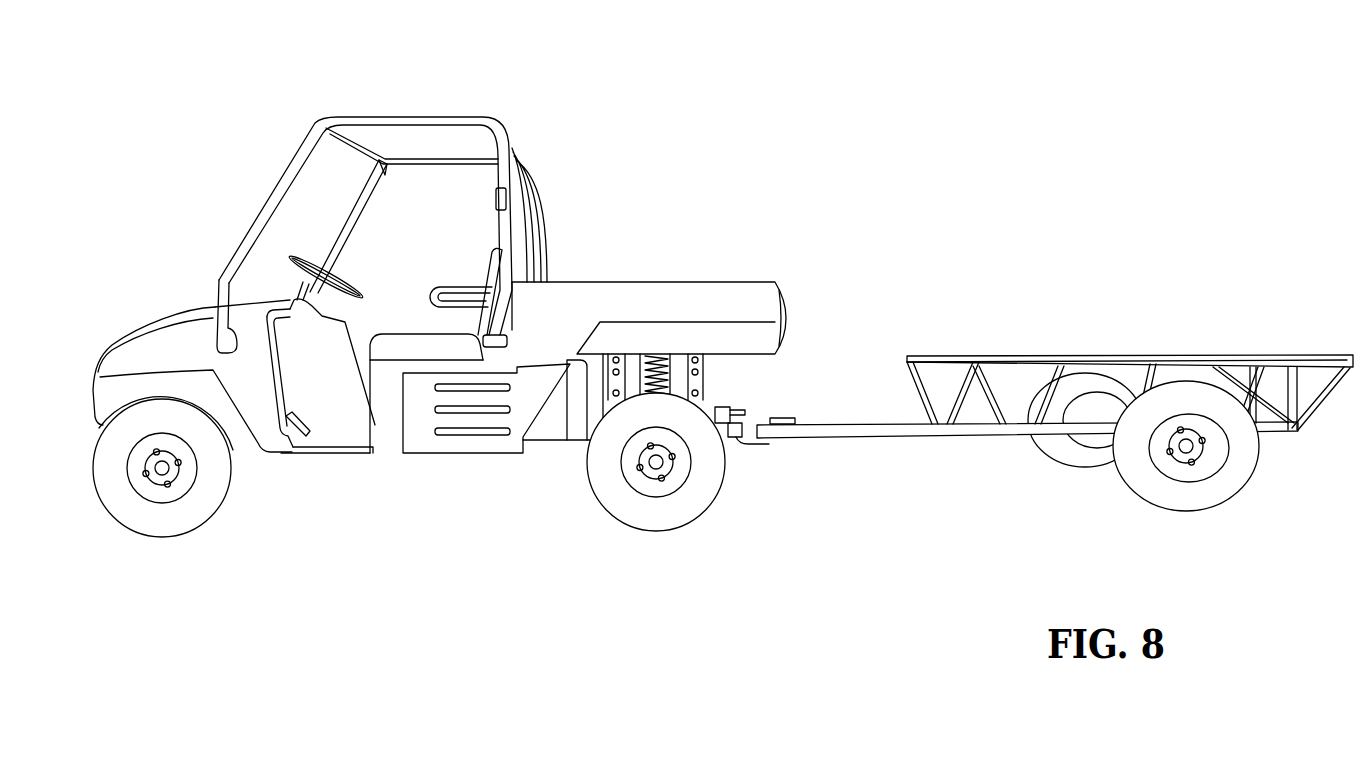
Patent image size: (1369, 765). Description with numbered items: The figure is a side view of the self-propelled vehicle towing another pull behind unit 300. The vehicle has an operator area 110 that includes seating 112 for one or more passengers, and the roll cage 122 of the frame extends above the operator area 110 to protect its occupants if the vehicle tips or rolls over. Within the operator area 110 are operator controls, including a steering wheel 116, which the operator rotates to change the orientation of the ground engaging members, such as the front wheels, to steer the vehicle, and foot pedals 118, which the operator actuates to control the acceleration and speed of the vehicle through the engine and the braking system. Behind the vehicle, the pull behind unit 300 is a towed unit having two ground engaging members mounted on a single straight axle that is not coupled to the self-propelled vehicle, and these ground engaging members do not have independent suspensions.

The operator area 110 is at (439, 308).
The seating 112 is at (402, 335).
The steering wheel 116 is at (348, 268).
The foot pedals 118 is at (305, 412).
The roll cage 122 is at (533, 140).
The pull behind unit 300 is at (1148, 322).